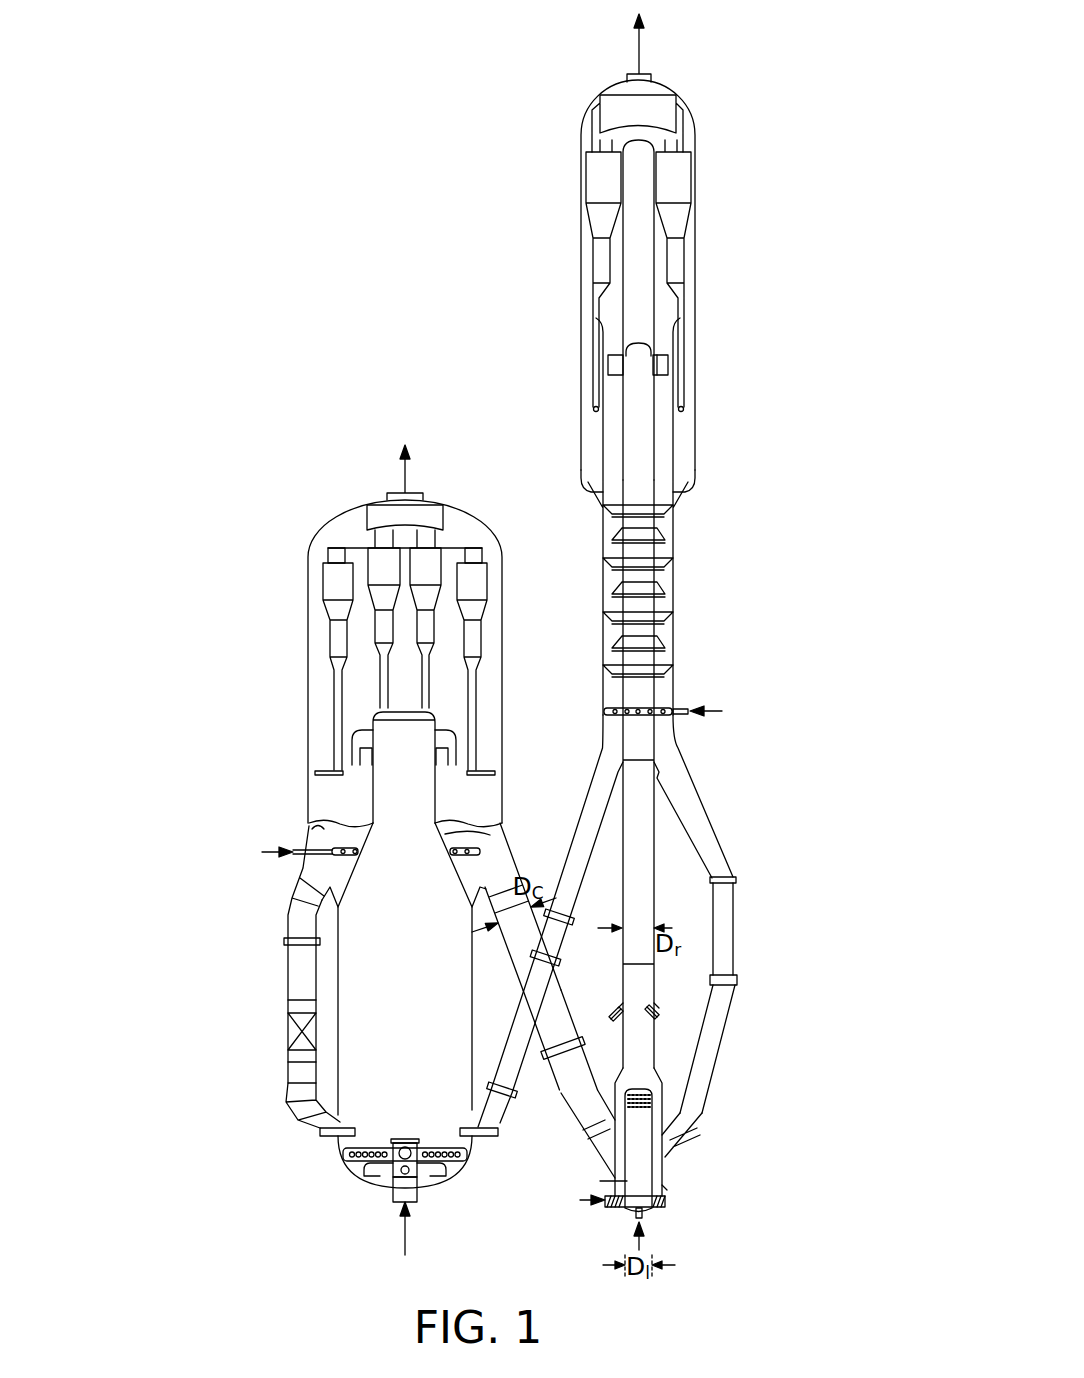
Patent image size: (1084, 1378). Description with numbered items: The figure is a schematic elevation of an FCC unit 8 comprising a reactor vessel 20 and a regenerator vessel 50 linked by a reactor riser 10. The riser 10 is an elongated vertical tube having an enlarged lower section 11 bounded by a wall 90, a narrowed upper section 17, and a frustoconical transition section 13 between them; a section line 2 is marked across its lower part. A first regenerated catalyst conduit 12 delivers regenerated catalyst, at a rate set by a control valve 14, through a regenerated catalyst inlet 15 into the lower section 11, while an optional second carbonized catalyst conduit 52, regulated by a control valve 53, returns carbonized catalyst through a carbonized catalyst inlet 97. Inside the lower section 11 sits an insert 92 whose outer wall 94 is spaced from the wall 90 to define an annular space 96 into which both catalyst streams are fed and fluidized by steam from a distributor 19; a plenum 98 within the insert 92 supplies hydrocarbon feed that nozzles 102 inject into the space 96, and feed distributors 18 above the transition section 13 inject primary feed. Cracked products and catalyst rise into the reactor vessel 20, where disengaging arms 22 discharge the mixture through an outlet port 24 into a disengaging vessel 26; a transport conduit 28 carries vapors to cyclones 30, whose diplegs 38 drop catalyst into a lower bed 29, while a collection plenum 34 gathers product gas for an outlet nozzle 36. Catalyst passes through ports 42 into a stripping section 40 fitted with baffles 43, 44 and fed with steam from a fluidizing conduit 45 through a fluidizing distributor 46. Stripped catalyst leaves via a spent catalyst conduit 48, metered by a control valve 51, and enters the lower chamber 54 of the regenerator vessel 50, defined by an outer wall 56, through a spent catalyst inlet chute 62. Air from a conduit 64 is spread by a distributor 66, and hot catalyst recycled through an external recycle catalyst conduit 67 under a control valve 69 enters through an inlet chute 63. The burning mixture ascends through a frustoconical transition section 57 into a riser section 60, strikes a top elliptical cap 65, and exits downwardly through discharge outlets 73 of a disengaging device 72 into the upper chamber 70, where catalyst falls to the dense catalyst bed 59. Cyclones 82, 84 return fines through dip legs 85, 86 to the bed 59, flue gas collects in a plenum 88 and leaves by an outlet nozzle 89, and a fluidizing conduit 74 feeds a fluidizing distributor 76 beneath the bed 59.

The FCC unit 8 is at (354, 294).
The reactor riser 10 is at (771, 920).
The lower section 11 is at (610, 1058).
The first regenerated catalyst conduit 12 is at (557, 992).
The transition section 13 is at (657, 1081).
The control valve 14 is at (580, 1112).
The regenerated catalyst inlet 15 is at (600, 1181).
The upper section 17 is at (654, 845).
The feed distributors 18 is at (618, 1005).
The distributor 19 is at (633, 1216).
The reactor vessel 20 is at (782, 520).
The disengaging arms 22 is at (612, 355).
The outlet ports 24 is at (666, 395).
The disengaging vessel 26 is at (666, 430).
The transport conduit 28 is at (642, 222).
The lower bed 29 is at (676, 508).
The cyclones 30 is at (603, 168).
The collection plenum 34 is at (656, 98).
The outlet nozzle 36 is at (627, 79).
The diplegs 38 is at (598, 362).
The stripping section 40 is at (668, 582).
The ports 42 is at (594, 492).
The baffles 43 is at (658, 617).
The baffles 44 is at (652, 588).
The fluidizing conduit 45 is at (690, 715).
The fluidizing distributor 46 is at (680, 711).
The spent catalyst conduit 48 is at (578, 862).
The regenerator vessel 50 is at (224, 732).
The control valve 51 is at (510, 1068).
The second carbonized catalyst conduit 52 is at (720, 848).
The control valve 53 is at (700, 1115).
The lower chamber 54 is at (437, 1063).
The outer wall 56 is at (473, 945).
The frustoconical transition section 57 is at (502, 860).
The dense catalyst bed 59 is at (318, 830).
The riser section 60 is at (445, 824).
The spent catalyst inlet chute 62 is at (468, 1135).
The inlet chute 63 is at (338, 1134).
The conduit 64 is at (400, 1192).
The top elliptical cap 65 is at (410, 712).
The distributor 66 is at (412, 1168).
The external recycle catalyst conduit 67 is at (288, 975).
The control valve 69 is at (290, 1035).
The upper chamber 70 is at (503, 703).
The disengaging device 72 is at (360, 738).
The discharge outlets 73 is at (445, 770).
The fluidizing conduit 74 is at (290, 856).
The fluidizing distributor 76 is at (482, 851).
The cyclones 82 is at (332, 605).
The cyclones 84 is at (388, 568).
The dip legs 85 is at (478, 700).
The dip legs 86 is at (336, 662).
The plenum 88 is at (390, 512).
The outlet nozzle 89 is at (424, 495).
The wall 90 is at (600, 1200).
The insert 92 is at (665, 1206).
The outer wall 94 is at (666, 1199).
The annular space 96 is at (652, 1138).
The carbonized catalyst inlet 97 is at (668, 1192).
The plenum 98 is at (603, 1188).
The nozzle 102 is at (629, 1075).
The section line 2 is at (559, 1097).